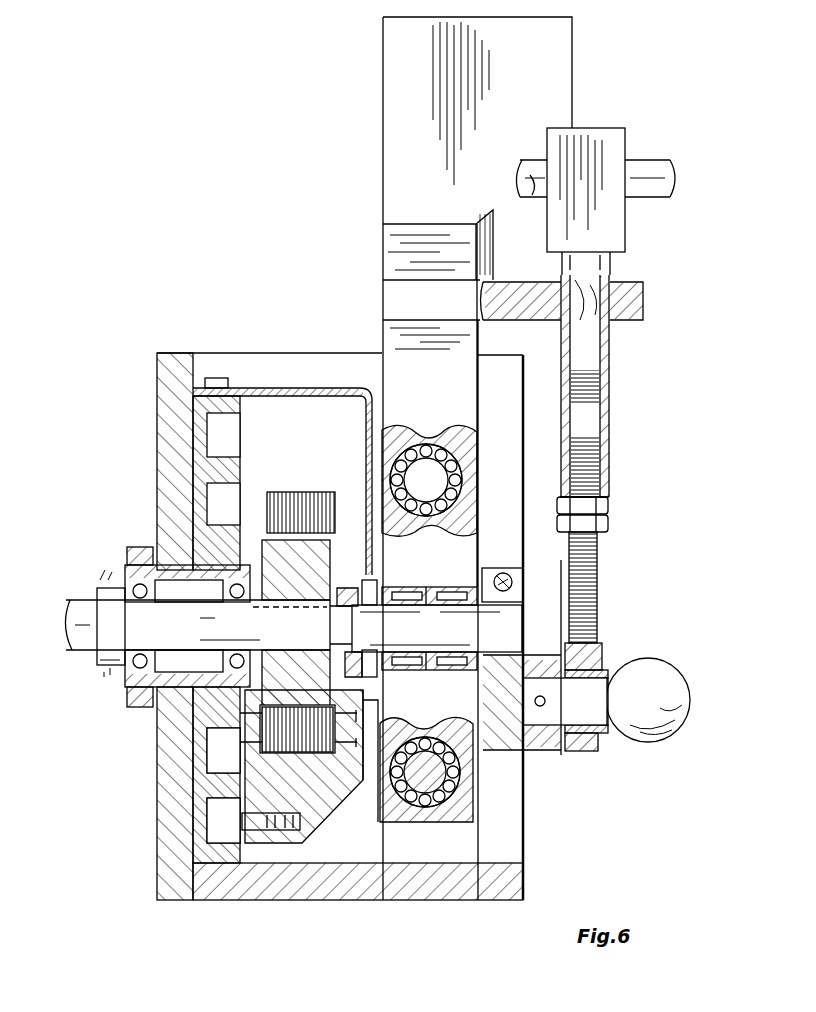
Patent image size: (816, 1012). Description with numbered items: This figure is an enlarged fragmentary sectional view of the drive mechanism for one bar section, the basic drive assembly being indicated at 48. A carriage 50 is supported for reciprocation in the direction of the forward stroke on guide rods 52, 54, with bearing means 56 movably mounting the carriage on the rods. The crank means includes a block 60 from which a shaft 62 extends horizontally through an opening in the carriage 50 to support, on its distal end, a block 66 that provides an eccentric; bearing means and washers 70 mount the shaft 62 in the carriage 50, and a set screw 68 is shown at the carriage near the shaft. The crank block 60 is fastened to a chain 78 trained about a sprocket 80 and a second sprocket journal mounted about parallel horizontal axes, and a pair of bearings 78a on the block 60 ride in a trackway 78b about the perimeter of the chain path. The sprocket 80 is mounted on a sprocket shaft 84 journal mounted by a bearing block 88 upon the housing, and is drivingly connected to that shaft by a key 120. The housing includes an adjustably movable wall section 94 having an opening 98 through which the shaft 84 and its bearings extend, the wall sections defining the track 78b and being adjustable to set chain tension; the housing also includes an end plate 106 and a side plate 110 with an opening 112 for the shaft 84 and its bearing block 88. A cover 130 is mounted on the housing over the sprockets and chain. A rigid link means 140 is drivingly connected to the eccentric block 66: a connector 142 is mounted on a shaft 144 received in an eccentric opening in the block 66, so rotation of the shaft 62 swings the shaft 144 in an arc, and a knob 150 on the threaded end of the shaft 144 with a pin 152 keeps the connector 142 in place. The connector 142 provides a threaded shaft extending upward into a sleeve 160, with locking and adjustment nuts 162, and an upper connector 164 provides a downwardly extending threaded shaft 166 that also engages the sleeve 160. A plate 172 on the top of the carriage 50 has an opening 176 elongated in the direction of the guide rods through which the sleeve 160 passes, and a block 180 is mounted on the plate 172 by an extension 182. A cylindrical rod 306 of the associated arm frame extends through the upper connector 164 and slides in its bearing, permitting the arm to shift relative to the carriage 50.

The drive assembly 48 is at (357, 300).
The carriage 50 is at (395, 367).
The guide rod 52 is at (418, 478).
The guide rod 54 is at (415, 865).
The bearing means 56 is at (440, 452).
The crank block 60 is at (367, 750).
The shaft 62 is at (492, 637).
The eccentric block 66 is at (532, 752).
The set screw 68 is at (518, 595).
The bearing means and washers 70 is at (445, 590).
The chain 78 is at (300, 492).
The bearings 78a is at (205, 820).
The trackway 78b is at (240, 432).
The sprocket 80 is at (258, 548).
The sprocket shaft 84 is at (222, 635).
The bearing block 88 is at (132, 728).
The wall section 94 is at (197, 428).
The opening 98 is at (200, 578).
The end plate 106 is at (248, 372).
The side plate 110 is at (165, 468).
The opening 112 is at (152, 555).
The key 120 is at (293, 600).
The cover 130 is at (307, 388).
The rigid link means 140 is at (635, 495).
The connector 142 is at (612, 640).
The shaft 144 is at (582, 730).
The knob 150 is at (690, 700).
The pin 152 is at (612, 680).
The sleeve 160 is at (610, 425).
The locking and adjustment nuts 162 is at (604, 524).
The upper connector 164 is at (605, 135).
The threaded shaft 166 is at (585, 292).
The plate 172 is at (645, 300).
The opening 176 is at (582, 322).
The block 180 is at (570, 48).
The extension 182 is at (432, 235).
The cylindrical rod 306 is at (535, 170).